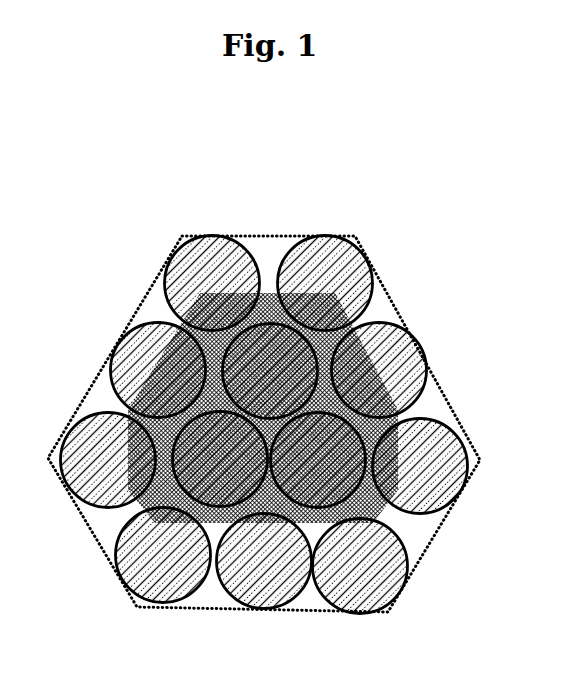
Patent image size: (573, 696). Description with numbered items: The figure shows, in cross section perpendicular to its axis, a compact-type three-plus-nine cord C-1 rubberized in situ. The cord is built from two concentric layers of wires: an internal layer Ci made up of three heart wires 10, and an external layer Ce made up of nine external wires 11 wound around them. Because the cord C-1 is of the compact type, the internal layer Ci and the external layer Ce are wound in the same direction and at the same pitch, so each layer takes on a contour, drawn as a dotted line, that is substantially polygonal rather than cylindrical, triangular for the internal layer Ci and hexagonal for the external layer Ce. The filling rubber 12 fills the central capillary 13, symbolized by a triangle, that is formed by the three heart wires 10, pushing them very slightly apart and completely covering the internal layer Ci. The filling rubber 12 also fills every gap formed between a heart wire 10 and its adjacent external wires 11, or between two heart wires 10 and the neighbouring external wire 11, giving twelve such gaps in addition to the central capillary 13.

The cord C-1 is at (283, 212).
The internal wires 10 is at (374, 512).
The external wires 11 is at (108, 460).
The filling rubber 12 is at (360, 323).
The central capillary 13 is at (287, 427).
The external layer Ce is at (108, 523).
The internal layer Ci is at (277, 505).